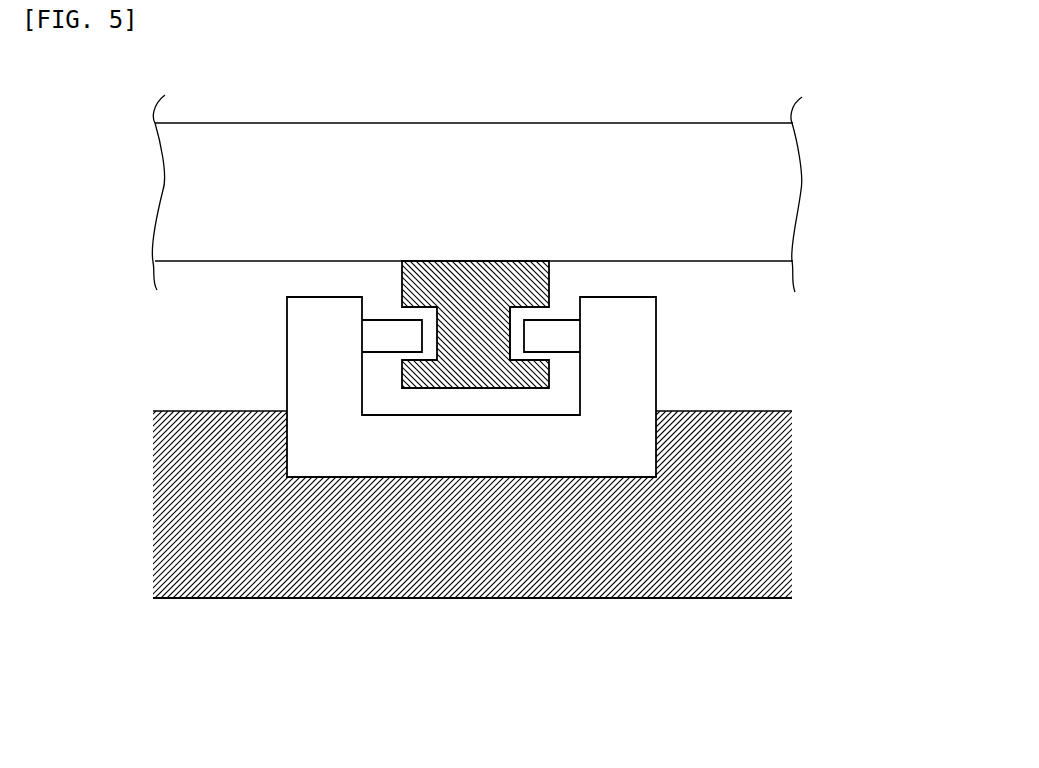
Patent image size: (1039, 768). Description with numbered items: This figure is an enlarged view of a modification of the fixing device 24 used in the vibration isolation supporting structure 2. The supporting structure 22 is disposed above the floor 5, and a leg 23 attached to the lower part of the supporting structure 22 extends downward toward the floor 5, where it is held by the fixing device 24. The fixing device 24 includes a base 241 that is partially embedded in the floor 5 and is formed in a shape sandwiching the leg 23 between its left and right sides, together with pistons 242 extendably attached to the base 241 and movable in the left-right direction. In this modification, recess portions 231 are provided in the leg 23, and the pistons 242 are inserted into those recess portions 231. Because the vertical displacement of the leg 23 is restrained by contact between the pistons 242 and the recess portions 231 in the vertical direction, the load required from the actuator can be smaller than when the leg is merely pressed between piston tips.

The vibration isolation supporting structure 2 is at (105, 285).
The supporting structure 22 is at (780, 184).
The leg 23 is at (475, 283).
The recess portion 231 is at (525, 320).
The fixing device 24 is at (471, 526).
The base 241 is at (317, 336).
The piston 242 is at (380, 337).
The floor 5 is at (178, 522).